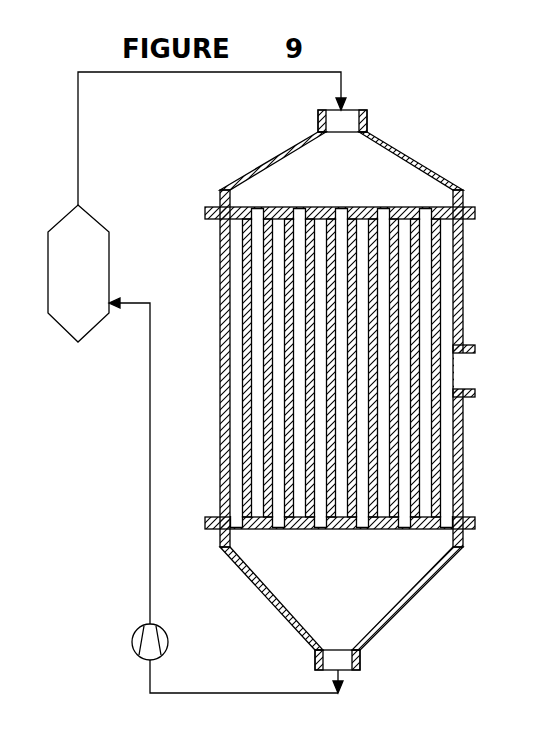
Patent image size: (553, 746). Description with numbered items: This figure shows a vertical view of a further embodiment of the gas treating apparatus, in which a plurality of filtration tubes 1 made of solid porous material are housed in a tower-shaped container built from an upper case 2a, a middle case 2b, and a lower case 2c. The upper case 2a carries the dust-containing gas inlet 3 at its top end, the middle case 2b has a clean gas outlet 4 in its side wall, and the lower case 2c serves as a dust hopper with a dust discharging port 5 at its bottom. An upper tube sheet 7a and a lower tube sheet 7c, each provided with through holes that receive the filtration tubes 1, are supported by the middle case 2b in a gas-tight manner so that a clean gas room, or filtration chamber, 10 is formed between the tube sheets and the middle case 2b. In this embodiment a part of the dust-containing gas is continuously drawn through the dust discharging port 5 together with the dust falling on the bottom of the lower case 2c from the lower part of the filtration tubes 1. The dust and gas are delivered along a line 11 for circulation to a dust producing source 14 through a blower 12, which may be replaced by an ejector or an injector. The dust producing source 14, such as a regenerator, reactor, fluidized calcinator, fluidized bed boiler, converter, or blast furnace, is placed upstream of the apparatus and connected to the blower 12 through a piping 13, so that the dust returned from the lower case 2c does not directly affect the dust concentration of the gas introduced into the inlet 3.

The filtration tubes 1 is at (437, 240).
The upper case 2a is at (403, 149).
The middle case 2b is at (455, 278).
The lower case 2c is at (428, 583).
The dust-containing gas inlet 3 is at (367, 120).
The clean gas outlet 4 is at (476, 365).
The dust discharging port 5 is at (362, 662).
The upper tube sheet 7a is at (407, 215).
The lower tube sheet 7c is at (405, 520).
The clean gas room 10 is at (445, 420).
The return line 11 is at (150, 677).
The blower 12 is at (134, 647).
The piping 13 is at (150, 488).
The dust producing source 14 is at (109, 250).